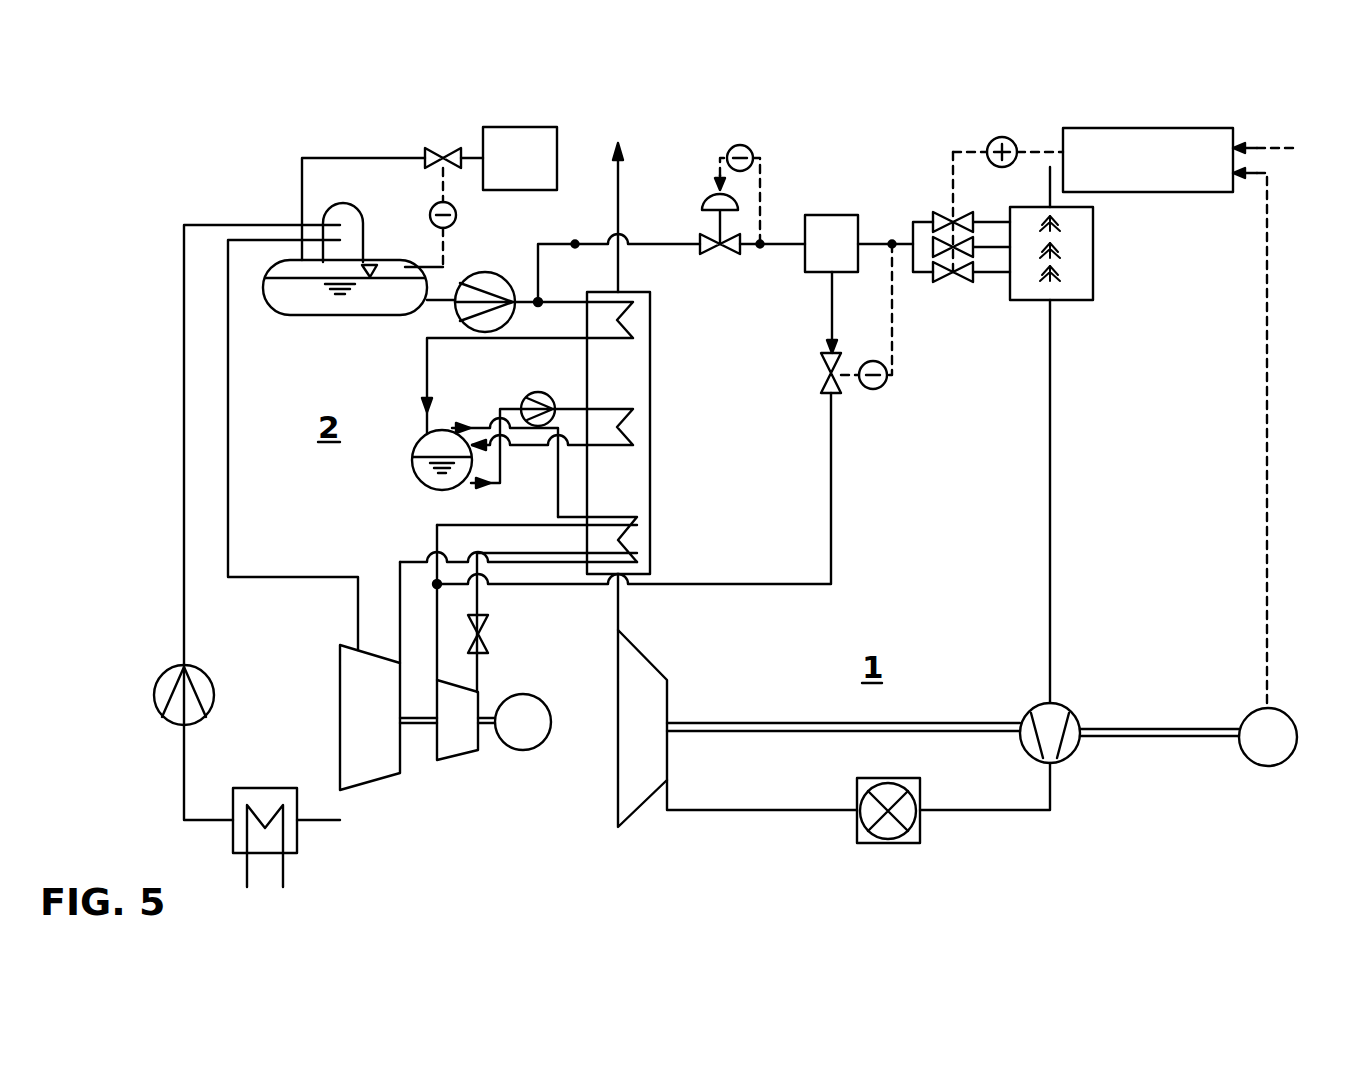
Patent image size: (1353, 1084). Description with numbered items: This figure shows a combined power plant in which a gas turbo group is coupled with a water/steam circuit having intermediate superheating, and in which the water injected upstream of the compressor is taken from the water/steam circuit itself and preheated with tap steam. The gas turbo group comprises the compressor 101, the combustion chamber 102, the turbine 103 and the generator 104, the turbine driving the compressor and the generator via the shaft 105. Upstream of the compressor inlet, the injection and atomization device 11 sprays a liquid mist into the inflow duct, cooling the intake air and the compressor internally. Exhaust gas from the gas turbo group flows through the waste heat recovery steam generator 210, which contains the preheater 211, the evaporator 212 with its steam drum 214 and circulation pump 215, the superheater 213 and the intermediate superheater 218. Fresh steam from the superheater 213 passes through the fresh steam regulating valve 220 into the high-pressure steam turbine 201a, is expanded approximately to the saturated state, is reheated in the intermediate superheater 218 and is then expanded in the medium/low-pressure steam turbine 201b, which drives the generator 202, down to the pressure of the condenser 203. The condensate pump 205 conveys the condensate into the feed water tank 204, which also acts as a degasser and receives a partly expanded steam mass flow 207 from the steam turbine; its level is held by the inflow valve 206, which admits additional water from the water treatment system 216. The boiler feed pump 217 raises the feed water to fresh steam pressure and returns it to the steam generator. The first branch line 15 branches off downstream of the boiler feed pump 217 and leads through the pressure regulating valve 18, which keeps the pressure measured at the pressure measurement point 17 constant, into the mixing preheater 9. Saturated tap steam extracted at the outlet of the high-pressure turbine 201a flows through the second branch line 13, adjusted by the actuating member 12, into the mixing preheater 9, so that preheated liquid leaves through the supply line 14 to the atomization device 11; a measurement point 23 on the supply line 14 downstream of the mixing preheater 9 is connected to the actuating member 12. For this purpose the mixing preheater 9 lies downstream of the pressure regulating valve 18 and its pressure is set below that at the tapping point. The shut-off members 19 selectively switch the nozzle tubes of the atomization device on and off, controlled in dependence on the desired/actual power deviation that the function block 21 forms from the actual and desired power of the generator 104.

The mixing preheater 9 is at (817, 217).
The injection and atomization device 11 is at (1092, 290).
The actuating member 12 is at (838, 393).
The second branch line 13 is at (833, 475).
The supply line 14 is at (905, 244).
The first branch line 15 is at (575, 244).
The pressure measurement point 17 is at (762, 228).
The pressure regulating valve 18 is at (705, 253).
The shut-off members 19 is at (963, 279).
The function block 21 is at (1142, 193).
The measuring point 23 is at (890, 244).
The compressor 101 is at (1065, 757).
The combustion chamber 102 is at (918, 822).
The turbine 103 is at (640, 803).
The generator 104 is at (1263, 767).
The shaft 105 is at (938, 723).
The high-pressure steam turbine 201a is at (445, 755).
The medium/low-pressure steam turbine 201b is at (380, 753).
The generator 202 is at (530, 749).
The condenser 203 is at (293, 835).
The feed water tank 204 is at (317, 315).
The condensate pump 205 is at (153, 690).
The inflow valve 206 is at (443, 148).
The partly expanded steam mass flow 207 is at (228, 507).
The waste heat recovery steam generator 210 is at (650, 460).
The preheater 211 is at (633, 313).
The evaporator 212 is at (635, 418).
The superheater 213 is at (637, 517).
The steam drum 214 is at (442, 490).
The circulation pump 215 is at (539, 392).
The water treatment system 216 is at (548, 179).
The boiler feed pump 217 is at (500, 249).
The intermediate superheater 218 is at (637, 562).
The fresh steam regulating valve 220 is at (487, 630).